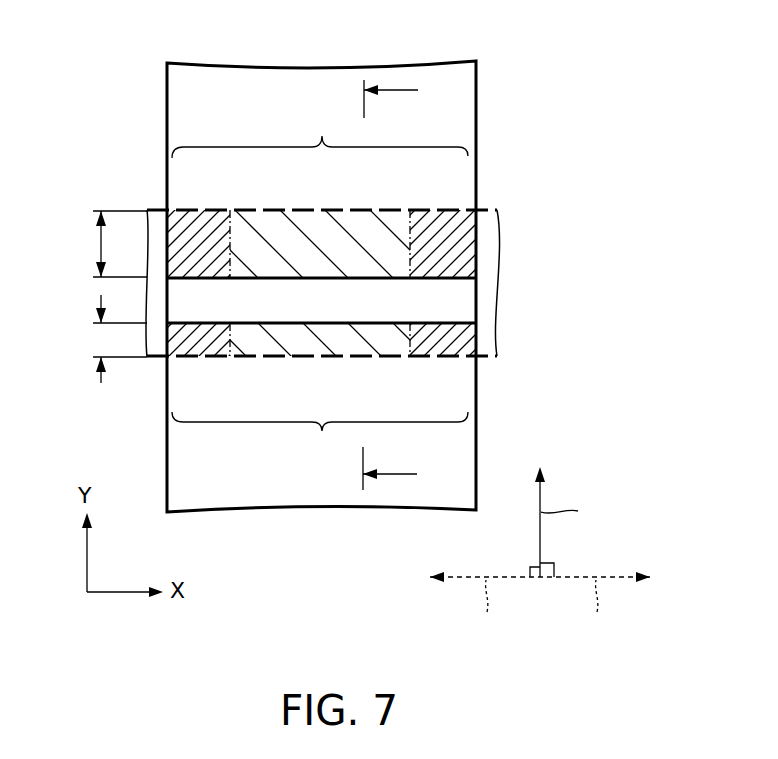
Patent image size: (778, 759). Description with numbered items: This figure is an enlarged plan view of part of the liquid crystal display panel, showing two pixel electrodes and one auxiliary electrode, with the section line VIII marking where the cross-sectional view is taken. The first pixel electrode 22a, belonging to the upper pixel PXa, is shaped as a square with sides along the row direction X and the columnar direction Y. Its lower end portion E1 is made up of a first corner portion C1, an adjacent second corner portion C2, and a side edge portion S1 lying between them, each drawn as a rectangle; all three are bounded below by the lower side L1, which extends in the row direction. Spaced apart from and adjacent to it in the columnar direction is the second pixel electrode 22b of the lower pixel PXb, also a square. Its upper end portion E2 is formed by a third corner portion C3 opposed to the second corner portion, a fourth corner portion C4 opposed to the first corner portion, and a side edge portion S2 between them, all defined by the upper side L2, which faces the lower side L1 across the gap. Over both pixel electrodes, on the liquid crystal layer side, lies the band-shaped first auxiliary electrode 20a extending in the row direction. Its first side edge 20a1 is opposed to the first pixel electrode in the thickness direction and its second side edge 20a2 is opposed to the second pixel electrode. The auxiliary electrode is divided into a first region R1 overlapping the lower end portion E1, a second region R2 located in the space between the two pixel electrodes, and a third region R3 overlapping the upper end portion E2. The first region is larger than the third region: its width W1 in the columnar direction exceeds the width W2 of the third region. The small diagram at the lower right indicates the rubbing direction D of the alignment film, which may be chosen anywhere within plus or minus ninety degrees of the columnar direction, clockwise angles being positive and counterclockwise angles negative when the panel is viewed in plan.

The first pixel electrode 22a is at (228, 75).
The second pixel electrode 22b is at (216, 500).
The upper pixel PXa is at (155, 141).
The lower pixel PXb is at (155, 456).
The first auxiliary electrode 20a is at (501, 268).
The first side edge 20a1 is at (483, 208).
The second side edge 20a2 is at (487, 357).
The lower side L1 is at (282, 278).
The upper side L2 is at (310, 323).
The first corner portion C1 is at (193, 222).
The second corner portion C2 is at (440, 222).
The third corner portion C3 is at (440, 345).
The fourth corner portion C4 is at (195, 345).
The side edge portion S1 is at (311, 222).
The side edge portion S2 is at (311, 345).
The lower end portion E1 is at (320, 135).
The upper end portion E2 is at (320, 437).
The width W1 is at (101, 247).
The width W2 is at (101, 338).
The first region R1 is at (488, 243).
The second region R2 is at (486, 296).
The third region R3 is at (488, 337).
The section line VIII- VIII is at (400, 90).
The rubbing direction D is at (546, 537).